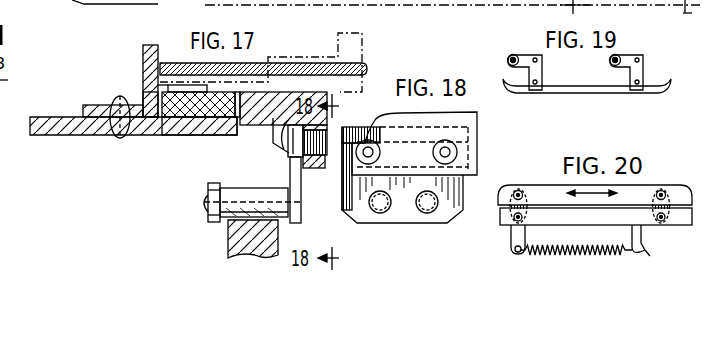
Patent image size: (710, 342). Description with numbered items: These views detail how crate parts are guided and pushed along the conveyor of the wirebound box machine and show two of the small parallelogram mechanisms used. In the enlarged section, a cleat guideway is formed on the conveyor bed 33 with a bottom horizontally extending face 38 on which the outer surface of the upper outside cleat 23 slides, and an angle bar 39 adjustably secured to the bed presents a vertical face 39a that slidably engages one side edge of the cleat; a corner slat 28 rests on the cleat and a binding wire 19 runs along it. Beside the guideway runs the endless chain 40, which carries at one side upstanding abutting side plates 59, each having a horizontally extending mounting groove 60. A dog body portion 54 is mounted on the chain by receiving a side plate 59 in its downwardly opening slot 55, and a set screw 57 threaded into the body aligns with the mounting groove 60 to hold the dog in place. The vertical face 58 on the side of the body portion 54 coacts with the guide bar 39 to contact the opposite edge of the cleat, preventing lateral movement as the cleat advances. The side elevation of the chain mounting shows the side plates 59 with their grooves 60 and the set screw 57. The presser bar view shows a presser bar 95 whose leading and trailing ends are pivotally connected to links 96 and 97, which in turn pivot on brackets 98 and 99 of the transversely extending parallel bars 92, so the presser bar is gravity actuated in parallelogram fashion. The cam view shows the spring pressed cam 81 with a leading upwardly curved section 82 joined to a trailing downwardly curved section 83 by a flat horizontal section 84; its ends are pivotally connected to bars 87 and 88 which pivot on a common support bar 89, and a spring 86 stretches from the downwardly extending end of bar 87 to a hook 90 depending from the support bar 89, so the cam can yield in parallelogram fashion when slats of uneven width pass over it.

In FIG. 17, the binding wire 19 is at (186, 86).
In FIG. 17, the upper outside cleat 23 is at (181, 109).
In FIG. 17, the corner slat 28 is at (295, 63).
In FIG. 17, the conveyor bed 33 is at (55, 132).
In FIG. 17, the bottom horizontally extending face 38 is at (198, 118).
In FIG. 17, the angle bar 39 is at (143, 75).
In FIG. 17, the vertical face 39a is at (157, 98).
In FIG. 17, the endless chain 40 is at (207, 212).
In FIG. 17, the body portion 54 is at (262, 126).
In FIG. 17, the downwardly opening slot 55 is at (285, 131).
In FIG. 17, the set screw 57 is at (306, 160).
In FIG. 18, the set screw 57 is at (453, 148).
In FIG. 17, the vertical face 58 is at (231, 118).
In FIG. 17, the side plate 59 is at (303, 195).
In FIG. 18, the side plate 59 is at (344, 197).
In FIG. 17, the mounting groove 60 is at (258, 186).
In FIG. 18, the mounting groove 60 is at (353, 126).
In FIG. 20, the spring pressed cam 81 is at (659, 180).
In FIG. 20, the leading upwardly curved section 82 is at (513, 190).
In FIG. 20, the trailing downwardly curved section 83 is at (690, 189).
In FIG. 20, the flat horizontal section 84 is at (550, 185).
In FIG. 20, the spring 86 is at (565, 254).
In FIG. 20, the bar 87 is at (515, 238).
In FIG. 20, the bar 88 is at (668, 213).
In FIG. 20, the common support bar 89 is at (583, 220).
In FIG. 20, the hook 90 is at (643, 253).
In FIG. 19, the transversely extending parallel bar 92 is at (509, 58).
In FIG. 19, the presser bar 95 is at (577, 93).
In FIG. 19, the link 96 is at (631, 72).
In FIG. 19, the link 97 is at (543, 72).
In FIG. 19, the bracket 98 is at (630, 55).
In FIG. 19, the bracket 99 is at (532, 57).